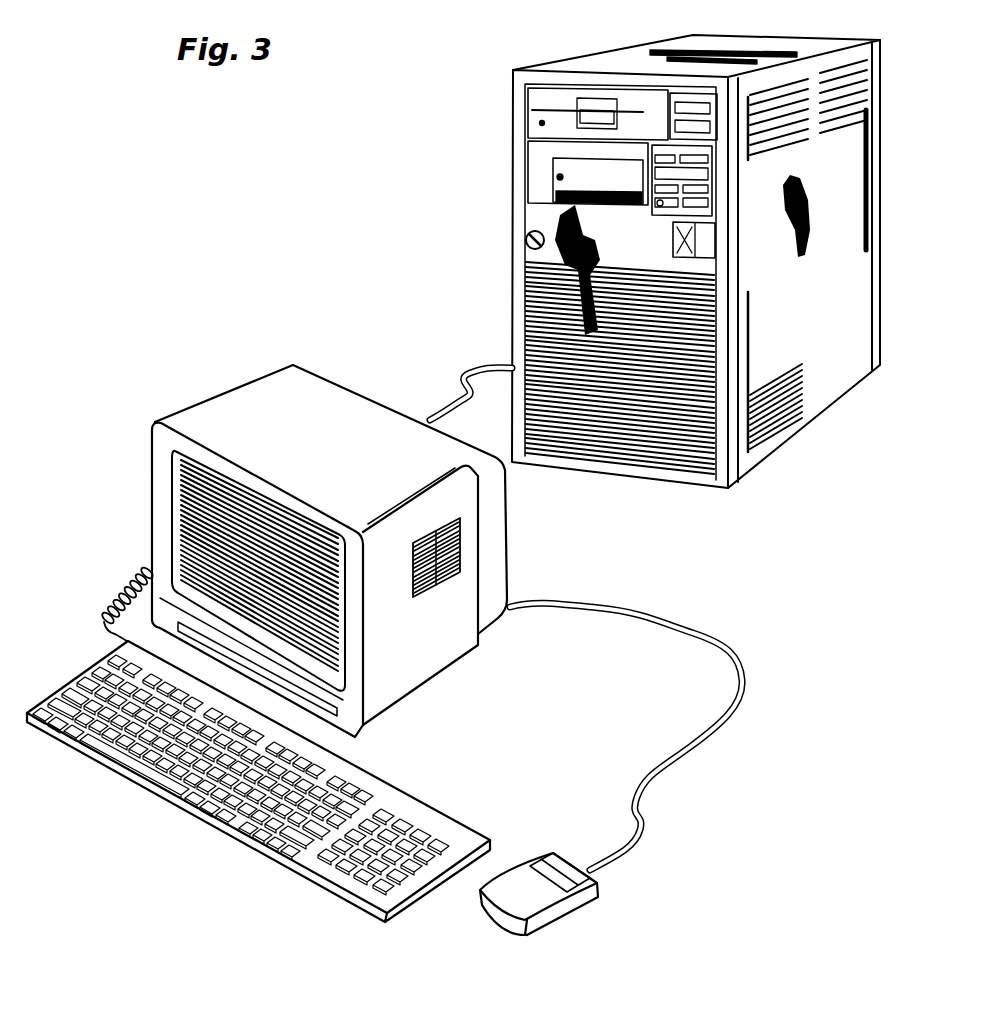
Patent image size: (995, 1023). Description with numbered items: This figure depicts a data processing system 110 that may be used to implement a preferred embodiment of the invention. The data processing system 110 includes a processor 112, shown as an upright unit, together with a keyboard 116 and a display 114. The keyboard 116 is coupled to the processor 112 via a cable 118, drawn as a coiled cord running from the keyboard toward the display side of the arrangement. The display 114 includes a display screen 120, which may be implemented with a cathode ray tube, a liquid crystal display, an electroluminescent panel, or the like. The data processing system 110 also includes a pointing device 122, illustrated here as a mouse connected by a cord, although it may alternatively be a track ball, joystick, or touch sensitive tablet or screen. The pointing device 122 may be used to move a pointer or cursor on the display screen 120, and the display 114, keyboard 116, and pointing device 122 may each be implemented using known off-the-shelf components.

The data processing system 110 is at (122, 212).
The processor 112 is at (512, 231).
The display 114 is at (497, 548).
The keyboard 116 is at (240, 831).
The cable 118 is at (123, 593).
The display screen 120 is at (268, 523).
The pointing device 122 is at (545, 918).